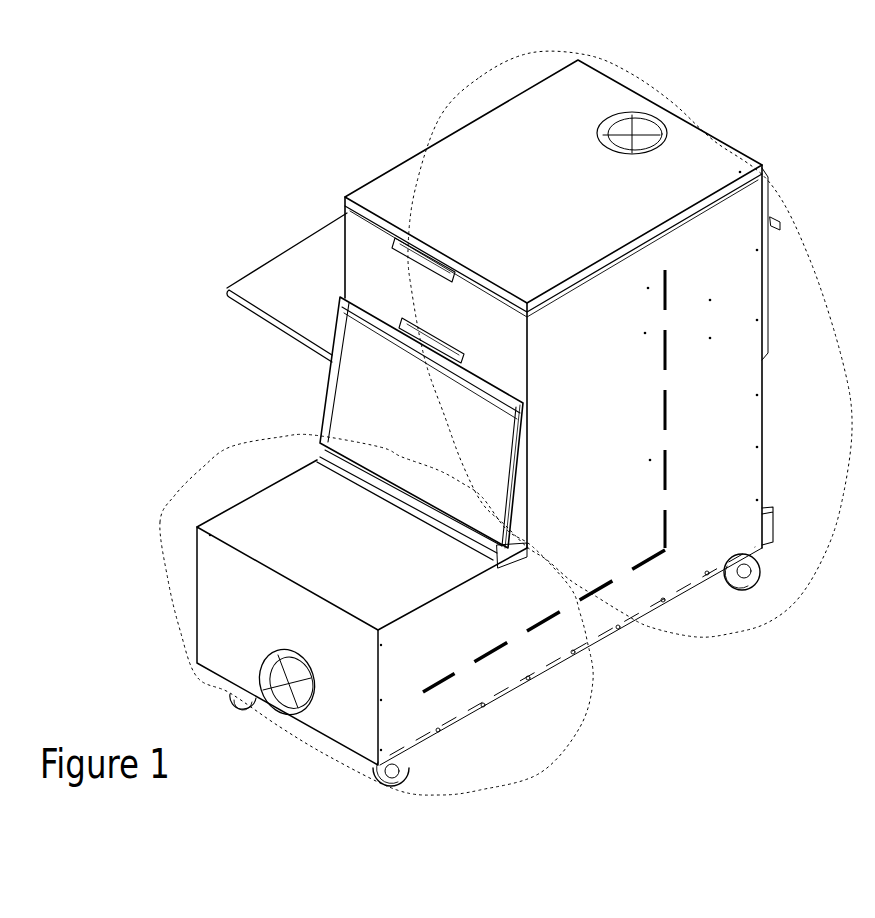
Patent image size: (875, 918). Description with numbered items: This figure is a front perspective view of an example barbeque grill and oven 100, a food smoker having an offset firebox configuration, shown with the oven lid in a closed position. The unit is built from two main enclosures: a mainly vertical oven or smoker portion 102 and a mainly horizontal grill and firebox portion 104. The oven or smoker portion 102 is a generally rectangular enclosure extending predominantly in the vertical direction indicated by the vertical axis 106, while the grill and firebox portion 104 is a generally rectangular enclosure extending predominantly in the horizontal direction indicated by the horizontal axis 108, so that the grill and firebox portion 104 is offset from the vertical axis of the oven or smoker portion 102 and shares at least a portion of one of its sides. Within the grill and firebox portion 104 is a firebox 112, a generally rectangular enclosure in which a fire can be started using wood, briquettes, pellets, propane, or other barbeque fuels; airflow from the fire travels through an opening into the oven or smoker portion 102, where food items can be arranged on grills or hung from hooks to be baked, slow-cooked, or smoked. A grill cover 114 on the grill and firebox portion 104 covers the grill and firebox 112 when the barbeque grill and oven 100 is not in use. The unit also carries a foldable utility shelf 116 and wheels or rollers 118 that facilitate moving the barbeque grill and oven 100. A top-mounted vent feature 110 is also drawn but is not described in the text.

The barbeque grill and oven 100 is at (465, 423).
The oven or smoker portion 102 is at (672, 95).
The grill and firebox portion 104 is at (425, 504).
The vertical axis 106 is at (743, 409).
The horizontal axis 108 is at (565, 630).
The top exhaust fan 110 is at (513, 131).
The firebox 112 is at (244, 566).
The grill cover 114 is at (336, 379).
The foldable utility shelf 116 is at (244, 287).
The wheels or rollers 118 is at (501, 670).